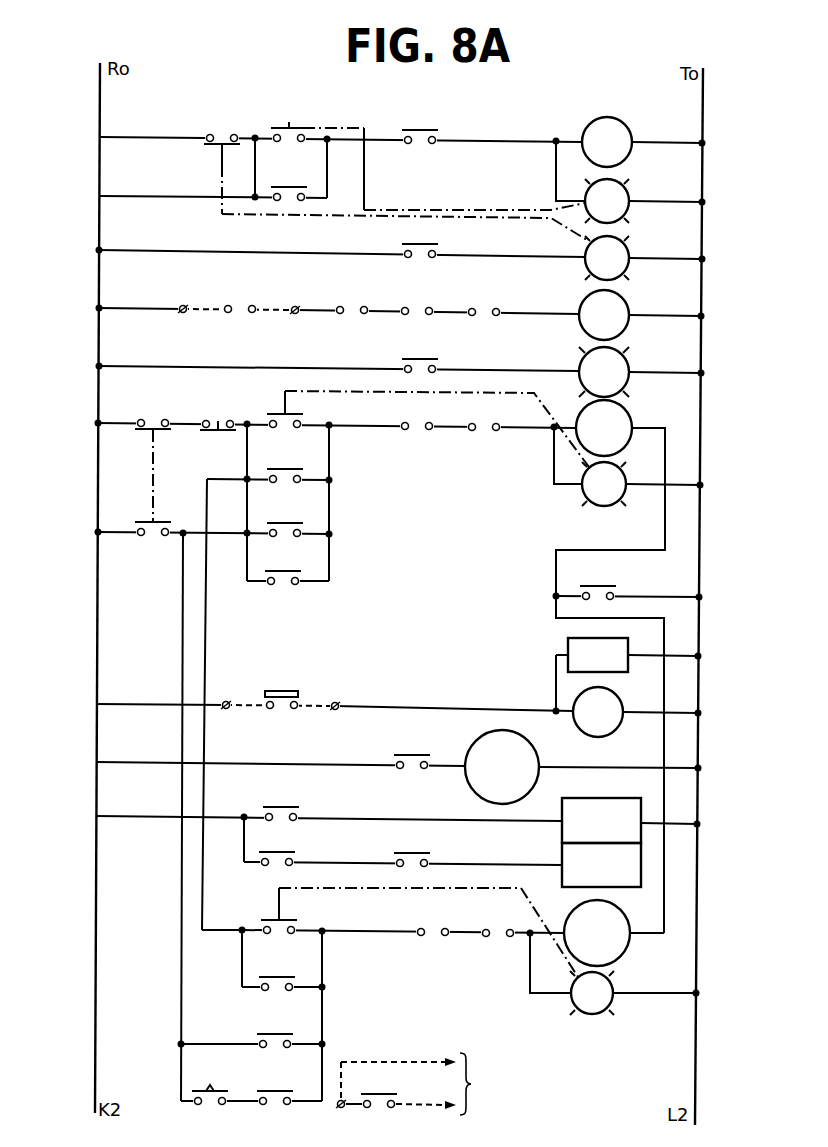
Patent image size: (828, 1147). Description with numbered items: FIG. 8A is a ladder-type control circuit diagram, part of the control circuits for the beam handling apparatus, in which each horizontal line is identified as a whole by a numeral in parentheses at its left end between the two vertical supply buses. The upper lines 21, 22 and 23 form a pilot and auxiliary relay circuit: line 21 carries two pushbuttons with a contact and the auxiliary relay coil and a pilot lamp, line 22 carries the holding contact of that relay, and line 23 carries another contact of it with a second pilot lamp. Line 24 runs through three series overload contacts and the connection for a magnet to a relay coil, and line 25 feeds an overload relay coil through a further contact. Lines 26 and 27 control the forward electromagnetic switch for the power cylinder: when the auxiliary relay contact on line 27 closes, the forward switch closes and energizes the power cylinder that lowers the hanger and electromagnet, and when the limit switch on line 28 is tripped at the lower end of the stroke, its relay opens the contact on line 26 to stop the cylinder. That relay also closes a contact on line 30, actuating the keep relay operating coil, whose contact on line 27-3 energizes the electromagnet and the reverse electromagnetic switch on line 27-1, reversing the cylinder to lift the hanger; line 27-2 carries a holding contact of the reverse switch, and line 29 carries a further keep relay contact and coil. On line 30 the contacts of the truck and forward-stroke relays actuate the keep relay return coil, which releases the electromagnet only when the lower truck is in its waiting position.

The line 21 is at (376, 168).
The line 22 is at (187, 187).
The line 23 is at (376, 251).
The line 24 is at (376, 301).
The line 25 is at (376, 368).
The line 26 is at (374, 650).
The line 27 is at (189, 802).
The line 28 is at (373, 651).
The line 29 is at (372, 767).
The line 30 is at (371, 836).
The line 27-1 is at (367, 994).
The line 27-2 is at (178, 1034).
The line 27-3 is at (346, 1087).